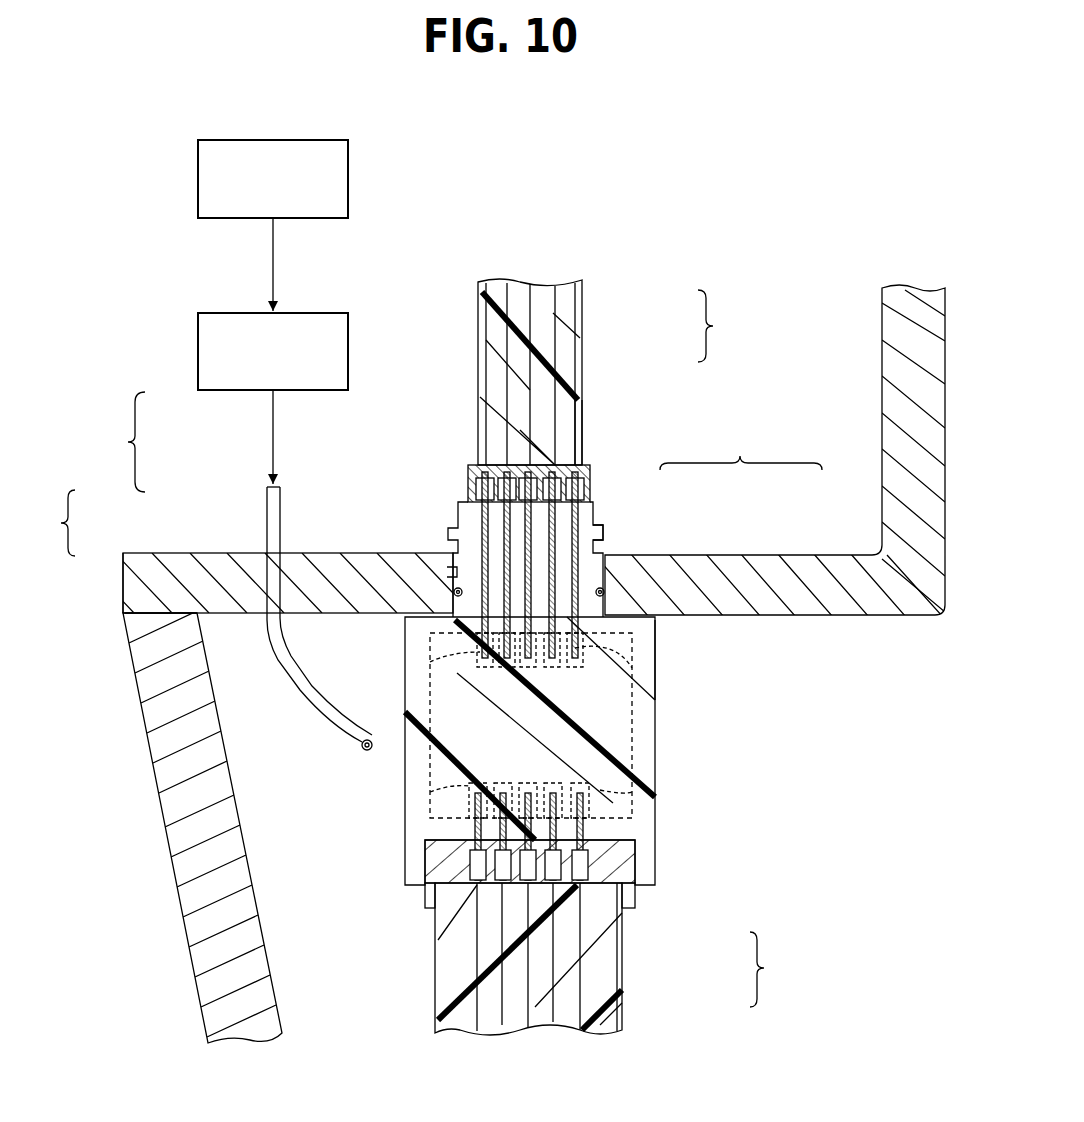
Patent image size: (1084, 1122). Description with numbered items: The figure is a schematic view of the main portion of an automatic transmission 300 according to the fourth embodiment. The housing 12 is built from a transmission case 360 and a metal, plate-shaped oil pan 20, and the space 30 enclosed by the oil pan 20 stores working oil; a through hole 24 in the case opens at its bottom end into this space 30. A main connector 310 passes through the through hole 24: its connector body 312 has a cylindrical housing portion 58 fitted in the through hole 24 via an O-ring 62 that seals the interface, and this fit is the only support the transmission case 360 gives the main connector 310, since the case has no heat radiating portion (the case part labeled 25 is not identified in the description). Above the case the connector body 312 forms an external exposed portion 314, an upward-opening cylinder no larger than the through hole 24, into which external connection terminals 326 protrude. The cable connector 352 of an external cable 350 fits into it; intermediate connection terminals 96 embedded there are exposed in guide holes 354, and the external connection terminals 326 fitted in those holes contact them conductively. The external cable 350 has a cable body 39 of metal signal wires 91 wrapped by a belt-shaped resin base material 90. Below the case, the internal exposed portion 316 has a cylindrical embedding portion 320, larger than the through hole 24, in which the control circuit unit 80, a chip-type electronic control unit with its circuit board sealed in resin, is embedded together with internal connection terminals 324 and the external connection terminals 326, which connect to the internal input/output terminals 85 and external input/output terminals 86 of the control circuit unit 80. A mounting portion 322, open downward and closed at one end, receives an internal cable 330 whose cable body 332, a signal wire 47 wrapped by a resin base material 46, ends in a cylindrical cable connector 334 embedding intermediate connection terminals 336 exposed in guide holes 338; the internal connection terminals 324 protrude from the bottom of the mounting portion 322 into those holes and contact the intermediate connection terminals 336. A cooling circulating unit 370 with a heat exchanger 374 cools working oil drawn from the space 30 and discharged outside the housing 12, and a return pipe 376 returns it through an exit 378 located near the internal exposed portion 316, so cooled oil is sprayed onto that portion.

The housing 12 is at (158, 763).
The oil pan 20 is at (180, 773).
The through hole 24 is at (445, 555).
The bracket side wall 25 is at (902, 372).
The space 30 is at (221, 622).
The cable body 39 is at (538, 356).
The base material 46 is at (490, 985).
The signal wire 47 is at (473, 1012).
The housing portion 58 is at (606, 560).
The O-ring 62 is at (454, 600).
The control circuit unit 80 is at (638, 733).
The internal input/output terminals 85 is at (532, 831).
The external input/output terminals 86 is at (470, 656).
The base material 90 is at (480, 373).
The signal wires 91 is at (584, 296).
The intermediate connection terminals 96 is at (560, 470).
The automatic transmission 300 is at (770, 397).
The main connector 310 is at (573, 751).
The connector body 312 is at (707, 560).
The external exposed portion 314 is at (602, 530).
The internal exposed portion 316 is at (660, 665).
The embedding portion 320 is at (658, 776).
The mounting portion 322 is at (541, 889).
The internal connection terminals 324 is at (709, 800).
The external connection terminals 326 is at (583, 623).
The internal cable 330 is at (580, 985).
The cable body 332 is at (627, 1003).
The cable connector 334 is at (642, 907).
The intermediate connection terminals 336 is at (494, 876).
The guide holes 338 is at (480, 857).
The external cable 350 is at (575, 356).
The cable connector 352 is at (590, 424).
The guide holes 354 is at (531, 499).
The transmission case 360 is at (143, 590).
The cooling circulating unit 370 is at (230, 466).
The heat exchanger 374 is at (213, 392).
The return pipe 376 is at (258, 623).
The exit 378 is at (364, 752).